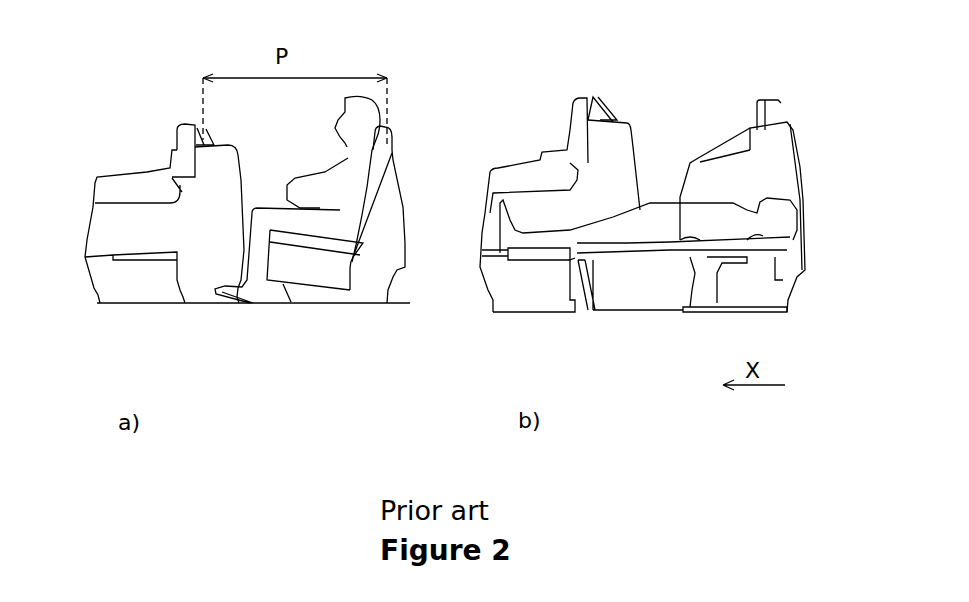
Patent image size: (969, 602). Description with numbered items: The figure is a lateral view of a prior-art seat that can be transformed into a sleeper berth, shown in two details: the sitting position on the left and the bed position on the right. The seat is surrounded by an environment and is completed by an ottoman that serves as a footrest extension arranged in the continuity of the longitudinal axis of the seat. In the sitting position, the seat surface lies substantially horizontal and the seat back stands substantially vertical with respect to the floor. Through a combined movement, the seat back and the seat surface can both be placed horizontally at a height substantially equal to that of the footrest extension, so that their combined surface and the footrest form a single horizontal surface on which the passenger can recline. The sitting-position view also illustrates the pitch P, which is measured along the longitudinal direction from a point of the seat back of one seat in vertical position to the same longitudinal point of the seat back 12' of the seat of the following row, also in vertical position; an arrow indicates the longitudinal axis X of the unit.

The seat back of the seat of the following row 12' is at (174, 109).